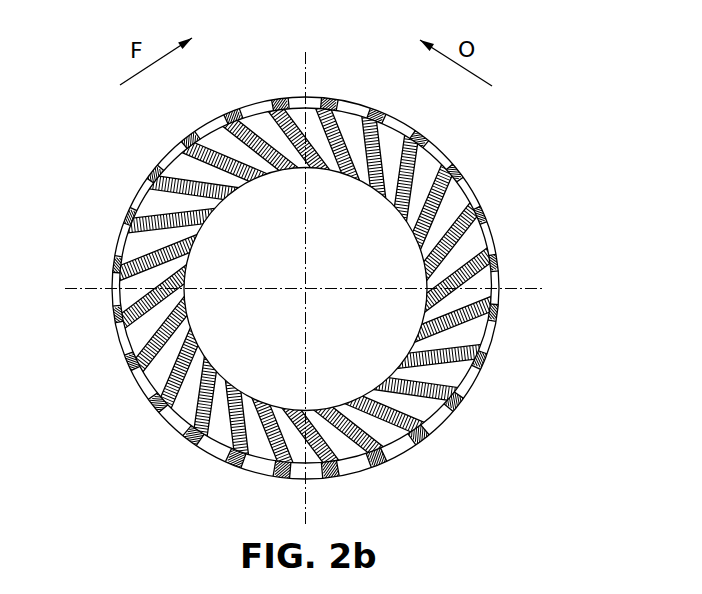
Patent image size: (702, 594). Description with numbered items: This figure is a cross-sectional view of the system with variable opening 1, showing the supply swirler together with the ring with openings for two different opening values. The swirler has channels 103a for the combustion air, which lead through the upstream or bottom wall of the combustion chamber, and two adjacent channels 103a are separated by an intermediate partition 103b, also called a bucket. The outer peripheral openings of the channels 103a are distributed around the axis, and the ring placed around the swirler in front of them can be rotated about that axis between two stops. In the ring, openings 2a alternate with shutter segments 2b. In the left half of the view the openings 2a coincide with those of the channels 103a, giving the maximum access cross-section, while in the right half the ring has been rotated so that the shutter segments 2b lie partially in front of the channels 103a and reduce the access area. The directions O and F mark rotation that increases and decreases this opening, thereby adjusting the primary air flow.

The system with variable opening 1 is at (534, 116).
The openings 2a is at (245, 112).
The shutter segments 2b is at (150, 180).
The channels 103a is at (167, 373).
The intermediate partition 103b is at (135, 226).